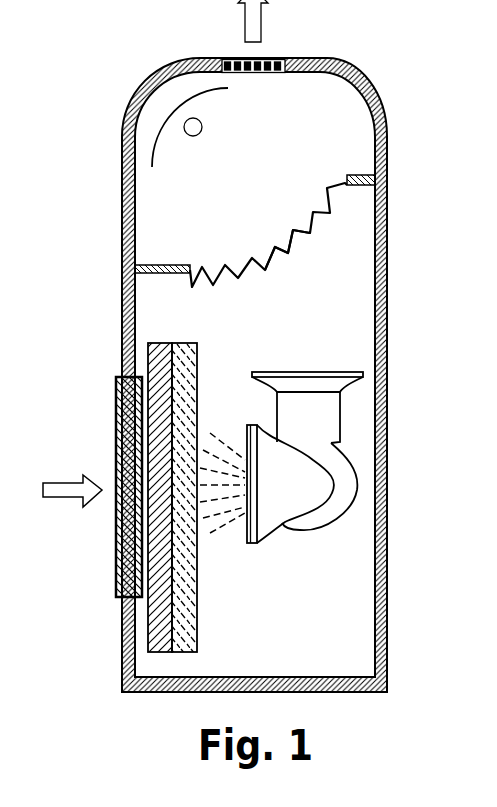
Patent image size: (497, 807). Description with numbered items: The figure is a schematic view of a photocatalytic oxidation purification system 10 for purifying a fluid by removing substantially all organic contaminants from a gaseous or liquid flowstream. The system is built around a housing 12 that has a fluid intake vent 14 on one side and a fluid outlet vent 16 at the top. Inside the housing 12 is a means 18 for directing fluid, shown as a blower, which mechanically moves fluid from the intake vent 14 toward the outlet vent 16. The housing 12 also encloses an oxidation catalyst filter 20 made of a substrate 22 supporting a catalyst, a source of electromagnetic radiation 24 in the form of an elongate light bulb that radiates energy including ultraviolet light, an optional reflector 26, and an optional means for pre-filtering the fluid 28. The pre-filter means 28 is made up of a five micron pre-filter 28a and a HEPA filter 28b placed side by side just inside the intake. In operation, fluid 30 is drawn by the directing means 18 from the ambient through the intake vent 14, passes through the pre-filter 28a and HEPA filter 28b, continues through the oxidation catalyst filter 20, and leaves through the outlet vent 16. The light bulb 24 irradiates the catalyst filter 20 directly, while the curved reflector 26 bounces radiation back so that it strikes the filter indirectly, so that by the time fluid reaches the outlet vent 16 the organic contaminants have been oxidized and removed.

The photocatalytic oxidation purification system 10 is at (113, 64).
The housing 12 is at (387, 345).
The fluid intake vent 14 is at (120, 562).
The fluid outlet vent 16 is at (274, 60).
The means for directing fluid 18 is at (306, 522).
The oxidation catalyst filter 20 is at (292, 277).
The substrate 22 is at (291, 231).
The source of electromagnetic radiation 24 is at (202, 128).
The reflector 26 is at (152, 167).
The means for pre-filtering the fluid 28 is at (162, 478).
The 5 micron pre-filter 28a is at (160, 343).
The HEPA filter 28b is at (185, 343).
The fluid 30 is at (78, 500).